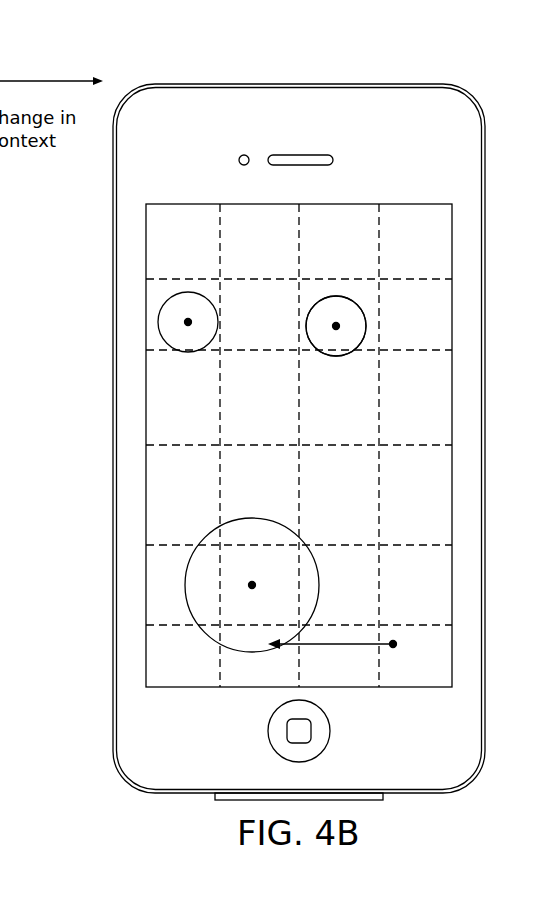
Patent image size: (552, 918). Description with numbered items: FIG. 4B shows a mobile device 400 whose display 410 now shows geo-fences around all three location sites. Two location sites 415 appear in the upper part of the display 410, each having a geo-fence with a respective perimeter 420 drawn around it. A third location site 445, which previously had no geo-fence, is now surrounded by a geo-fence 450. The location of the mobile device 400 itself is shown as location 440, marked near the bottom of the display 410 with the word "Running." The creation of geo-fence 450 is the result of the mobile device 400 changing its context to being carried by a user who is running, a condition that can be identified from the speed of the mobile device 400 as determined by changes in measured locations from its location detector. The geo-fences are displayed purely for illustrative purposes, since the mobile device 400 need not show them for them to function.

The mobile device 400 is at (193, 84).
The display 410 is at (220, 688).
The location sites 415 is at (335, 323).
The perimeters 420 is at (366, 327).
The geo-fence 450 is at (238, 518).
The location site 445 is at (252, 585).
The location 440 is at (393, 644).